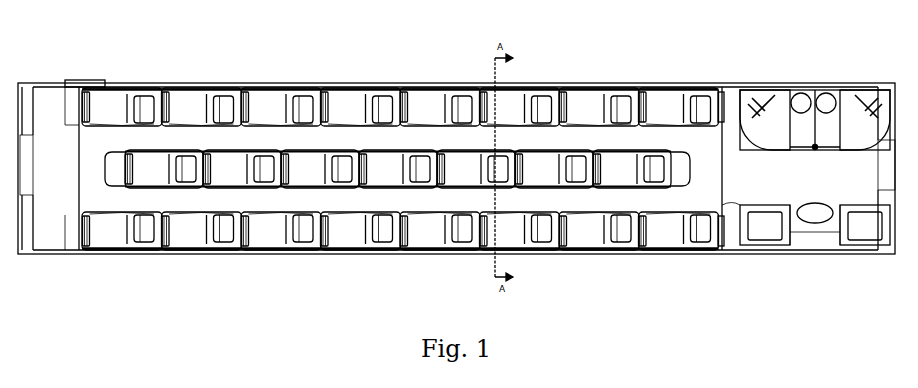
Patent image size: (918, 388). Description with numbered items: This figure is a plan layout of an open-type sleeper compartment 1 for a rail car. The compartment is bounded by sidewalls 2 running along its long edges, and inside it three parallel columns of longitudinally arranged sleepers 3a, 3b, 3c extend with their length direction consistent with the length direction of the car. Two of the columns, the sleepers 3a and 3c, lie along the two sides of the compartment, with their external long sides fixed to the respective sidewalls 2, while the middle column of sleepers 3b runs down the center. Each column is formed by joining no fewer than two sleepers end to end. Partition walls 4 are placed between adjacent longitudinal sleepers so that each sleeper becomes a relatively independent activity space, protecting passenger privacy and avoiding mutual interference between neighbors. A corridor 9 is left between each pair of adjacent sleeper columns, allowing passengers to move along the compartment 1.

The sleeper compartment 1 is at (155, 84).
The sidewall 2 is at (398, 84).
The longitudinally arranged sleeper 3a is at (585, 110).
The longitudinally arranged sleeper 3b is at (616, 168).
The longitudinally arranged sleeper 3c is at (583, 232).
The partition wall 4 is at (200, 170).
The corridor 9 is at (240, 135).